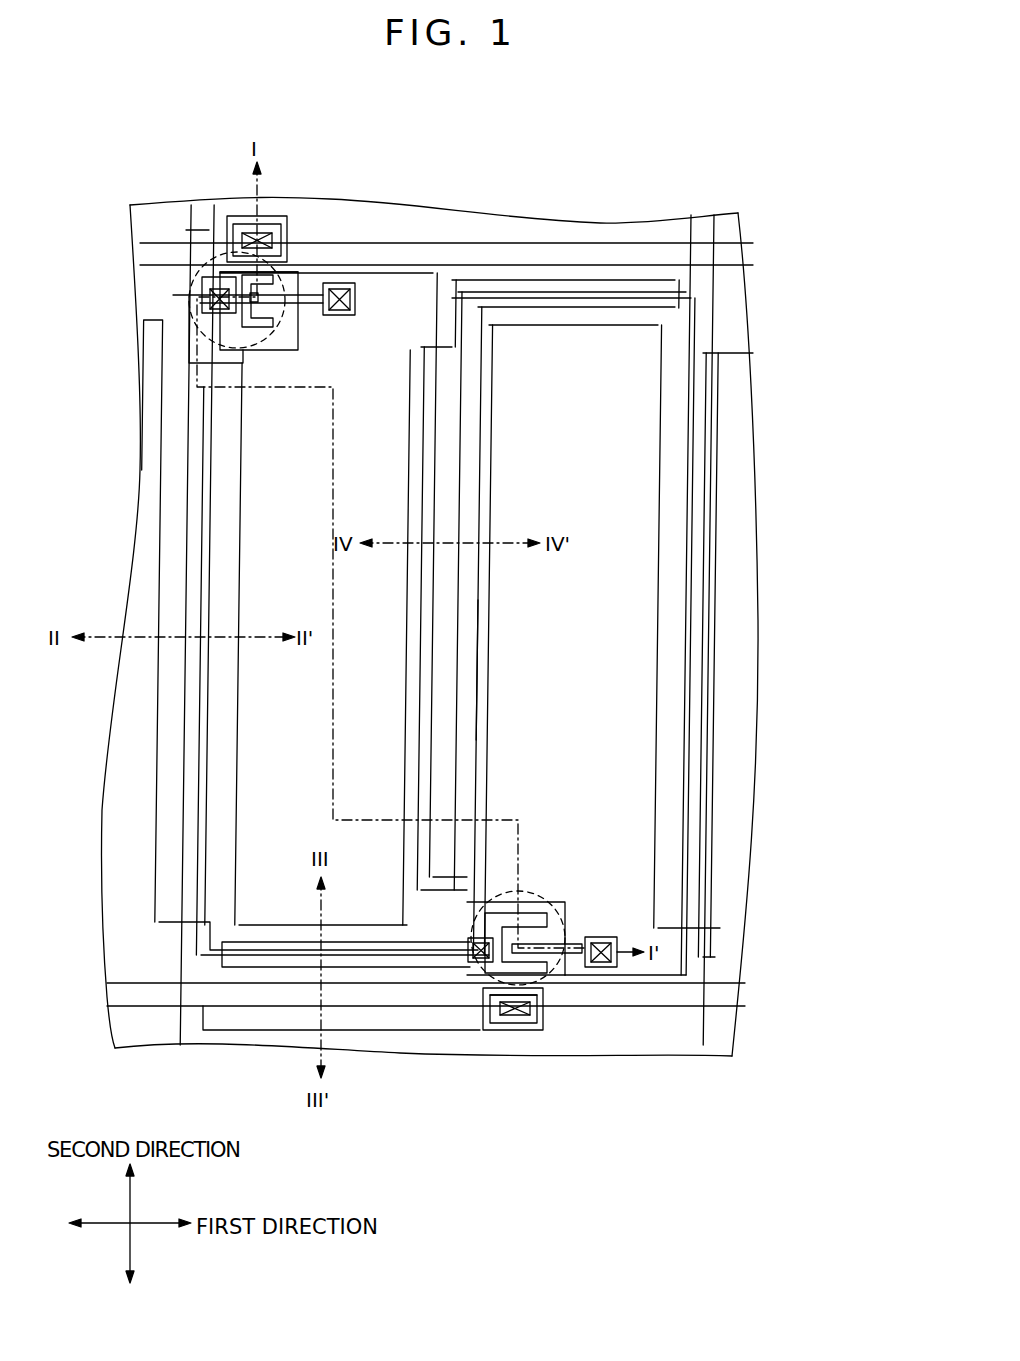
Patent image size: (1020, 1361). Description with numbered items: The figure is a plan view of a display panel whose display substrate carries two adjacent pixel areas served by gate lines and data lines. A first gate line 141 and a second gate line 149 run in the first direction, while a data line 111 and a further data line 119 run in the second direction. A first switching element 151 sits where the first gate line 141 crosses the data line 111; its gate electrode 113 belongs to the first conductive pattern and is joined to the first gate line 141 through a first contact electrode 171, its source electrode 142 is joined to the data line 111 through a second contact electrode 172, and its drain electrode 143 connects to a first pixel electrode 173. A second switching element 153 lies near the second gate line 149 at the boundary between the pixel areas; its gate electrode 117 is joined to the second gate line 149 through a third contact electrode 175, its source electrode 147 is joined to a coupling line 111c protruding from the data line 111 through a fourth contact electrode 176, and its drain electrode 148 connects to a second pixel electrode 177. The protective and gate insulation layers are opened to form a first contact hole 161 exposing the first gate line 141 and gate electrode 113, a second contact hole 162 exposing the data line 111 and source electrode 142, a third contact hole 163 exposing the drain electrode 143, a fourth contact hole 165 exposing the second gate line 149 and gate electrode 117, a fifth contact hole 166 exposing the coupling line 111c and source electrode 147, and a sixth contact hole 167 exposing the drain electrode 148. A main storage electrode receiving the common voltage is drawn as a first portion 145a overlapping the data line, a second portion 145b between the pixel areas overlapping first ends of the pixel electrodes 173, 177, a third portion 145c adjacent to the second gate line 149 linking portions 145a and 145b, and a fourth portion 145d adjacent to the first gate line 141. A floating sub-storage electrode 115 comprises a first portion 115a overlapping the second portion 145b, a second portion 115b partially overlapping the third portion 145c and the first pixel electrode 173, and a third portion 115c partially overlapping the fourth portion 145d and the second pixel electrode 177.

The data line 111 is at (205, 208).
The coupling line 111c is at (374, 1032).
The gate electrode 113 is at (290, 270).
The sub-storage electrode 115 is at (478, 734).
The first portion of sub-storage electrode 115a is at (463, 641).
The second portion of sub-storage electrode 115b is at (240, 950).
The third portion of sub-storage electrode 115c is at (613, 303).
The gate electrode 117 is at (507, 1031).
The data line 119 is at (703, 228).
The first gate line 141 is at (155, 248).
The source electrode 142 is at (200, 280).
The drain electrode 143 is at (287, 313).
The first portion of main storage electrode 145a is at (160, 536).
The second portion of main storage electrode 145b is at (486, 691).
The third portion of main storage electrode 145c is at (267, 922).
The fourth portion of main storage electrode 145d is at (541, 312).
The source electrode 147 is at (530, 910).
The drain electrode 148 is at (612, 936).
The second gate line 149 is at (122, 990).
The first switching element 151 is at (300, 290).
The second switching element 153 is at (546, 1003).
The first contact hole 161 is at (226, 222).
The second contact hole 162 is at (192, 312).
The third contact hole 163 is at (356, 300).
The fourth contact hole 165 is at (523, 1017).
The fifth contact hole 166 is at (468, 955).
The sixth contact hole 167 is at (592, 936).
The first contact electrode 171 is at (268, 221).
The second contact electrode 172 is at (205, 302).
The first pixel electrode 173 is at (270, 466).
The third contact electrode 175 is at (546, 996).
The fourth contact electrode 176 is at (480, 968).
The second pixel electrode 177 is at (628, 532).